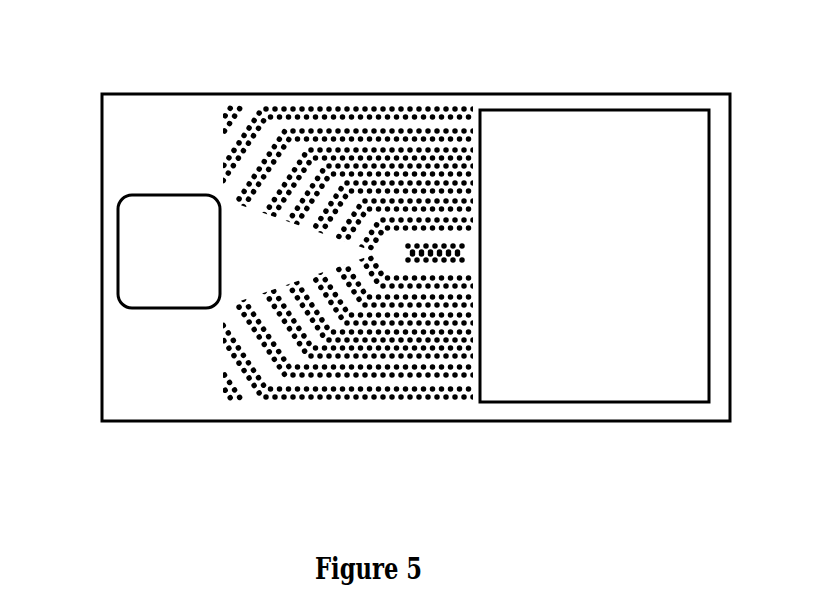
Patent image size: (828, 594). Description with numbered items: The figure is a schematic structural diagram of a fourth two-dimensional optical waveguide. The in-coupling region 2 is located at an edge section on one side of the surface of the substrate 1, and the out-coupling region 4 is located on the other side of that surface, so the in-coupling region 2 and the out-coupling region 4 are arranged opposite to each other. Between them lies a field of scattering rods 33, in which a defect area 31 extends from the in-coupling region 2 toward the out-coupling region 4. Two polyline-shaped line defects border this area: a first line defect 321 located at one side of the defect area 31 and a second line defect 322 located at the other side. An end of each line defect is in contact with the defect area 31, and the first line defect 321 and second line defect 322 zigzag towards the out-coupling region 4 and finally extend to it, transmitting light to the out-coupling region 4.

The substrate 1 is at (158, 130).
The in-coupling region 2 is at (153, 238).
The defect area 31 is at (248, 265).
The first line defect 321 is at (327, 127).
The second line defect 322 is at (340, 383).
The scattering rod 33 is at (311, 278).
The out-coupling region 4 is at (545, 160).